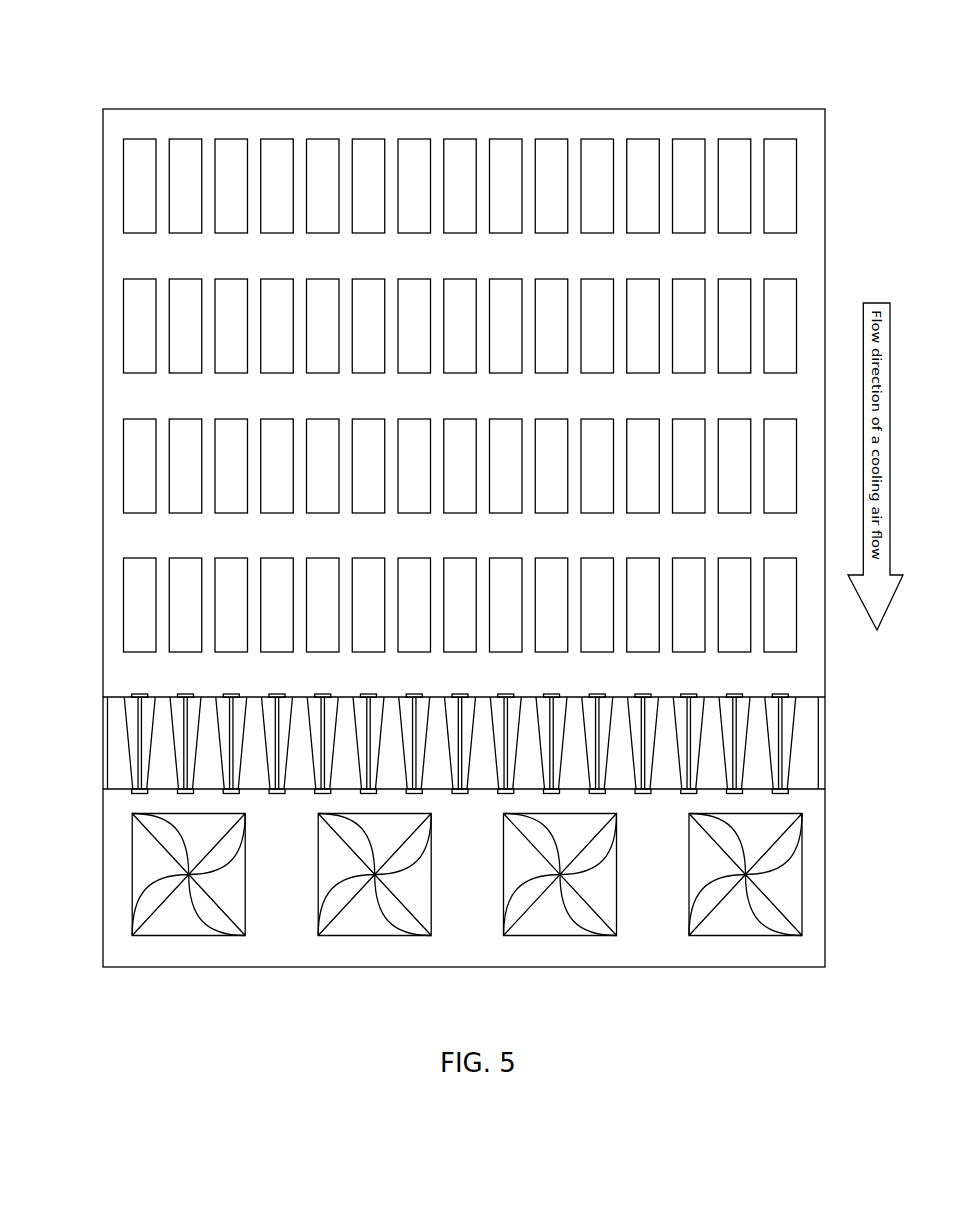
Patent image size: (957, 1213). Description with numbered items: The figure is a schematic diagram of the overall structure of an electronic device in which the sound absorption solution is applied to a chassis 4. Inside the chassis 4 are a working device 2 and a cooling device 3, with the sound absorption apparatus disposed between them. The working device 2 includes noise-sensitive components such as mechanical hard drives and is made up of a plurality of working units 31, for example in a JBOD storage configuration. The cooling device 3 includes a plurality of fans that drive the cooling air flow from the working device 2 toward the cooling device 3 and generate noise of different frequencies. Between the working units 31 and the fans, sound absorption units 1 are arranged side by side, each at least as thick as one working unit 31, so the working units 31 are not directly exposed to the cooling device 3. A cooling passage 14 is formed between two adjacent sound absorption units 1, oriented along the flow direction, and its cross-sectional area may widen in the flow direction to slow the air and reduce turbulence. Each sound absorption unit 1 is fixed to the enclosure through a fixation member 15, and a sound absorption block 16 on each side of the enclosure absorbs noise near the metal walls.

The chassis 4 is at (705, 110).
The working device 2 is at (128, 253).
The working unit 31 is at (143, 337).
The sound absorption unit 1 is at (130, 732).
The cooling passage 14 is at (755, 747).
The fixation member 15 is at (740, 694).
The sound absorption block 16 is at (820, 762).
The cooling device 3 is at (127, 870).